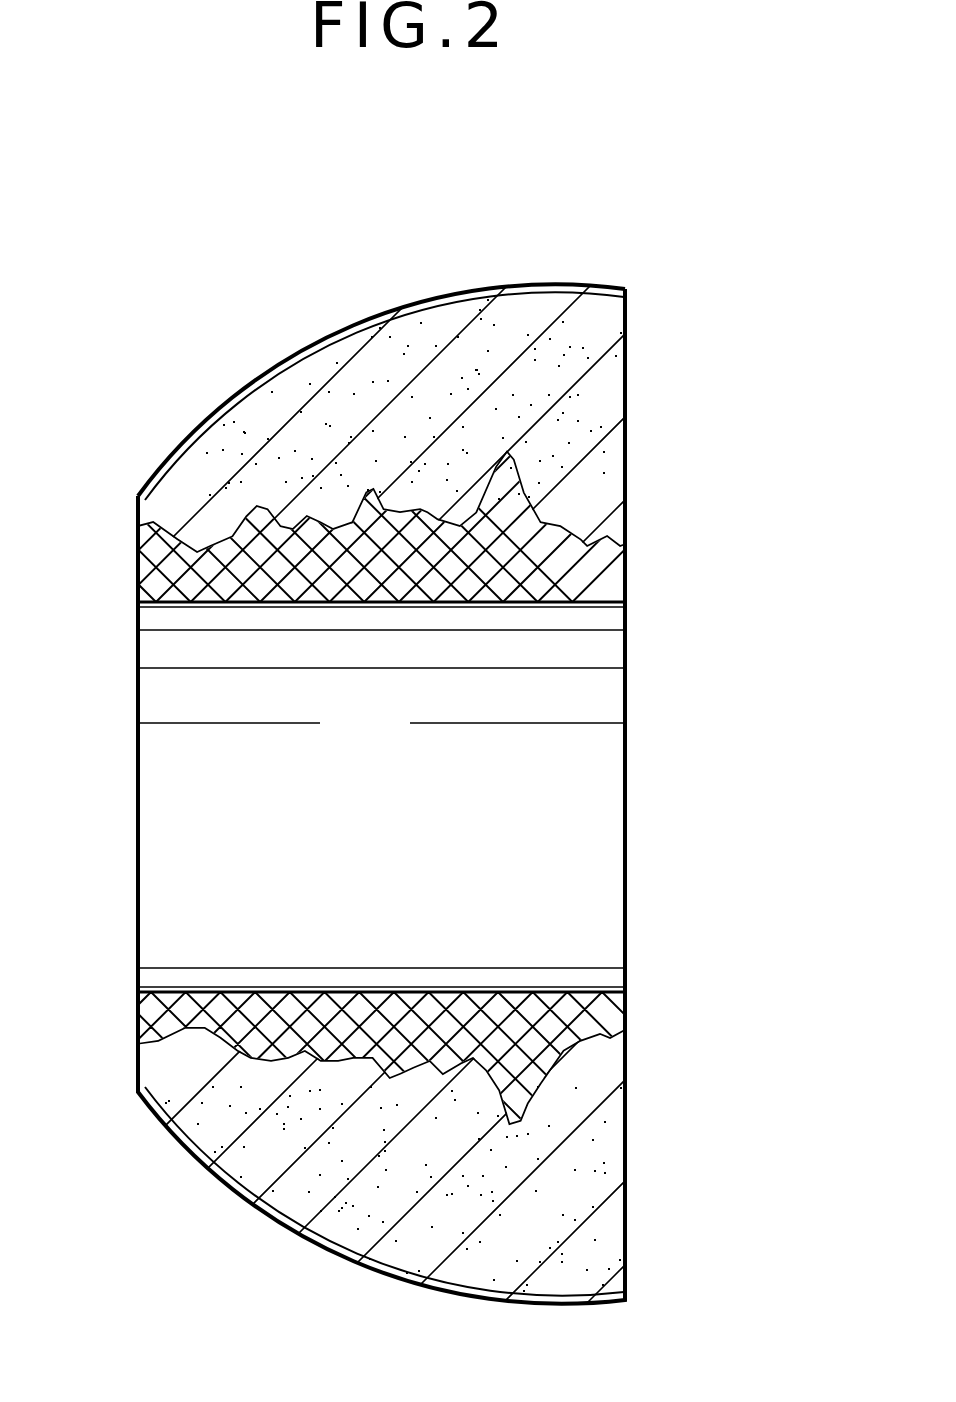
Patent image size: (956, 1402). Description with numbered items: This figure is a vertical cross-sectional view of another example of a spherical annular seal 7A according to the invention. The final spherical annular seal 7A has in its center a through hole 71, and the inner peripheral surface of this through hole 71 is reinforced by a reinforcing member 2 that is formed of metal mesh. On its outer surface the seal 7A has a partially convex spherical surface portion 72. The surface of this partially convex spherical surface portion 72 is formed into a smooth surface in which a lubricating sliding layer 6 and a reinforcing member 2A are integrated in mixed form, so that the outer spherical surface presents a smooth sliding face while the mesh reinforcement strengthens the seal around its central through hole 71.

The reinforcing member 2 is at (627, 577).
The reinforcing member 2A is at (302, 346).
The lubricating sliding layer 6 is at (548, 290).
The spherical annular seal 7A is at (633, 525).
The through hole 71 is at (337, 607).
The partially convex spherical surface portion 72 is at (177, 453).